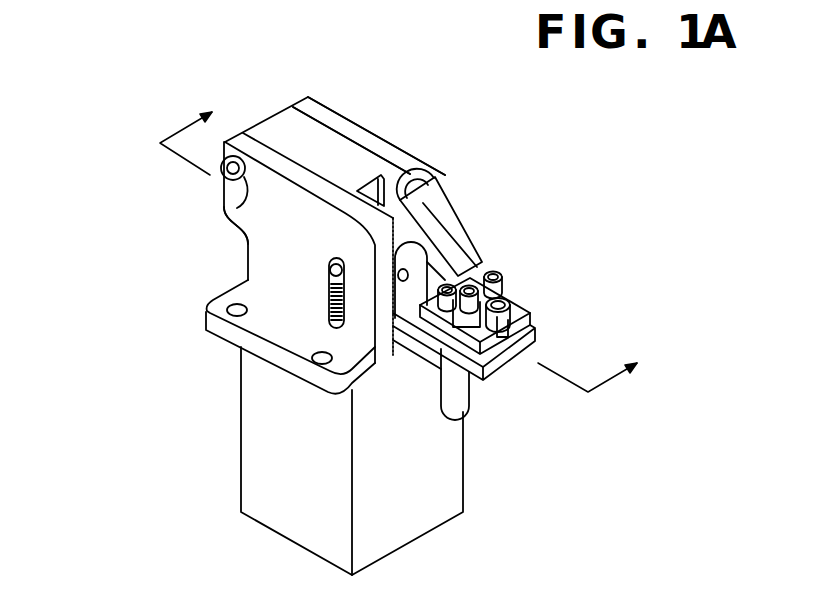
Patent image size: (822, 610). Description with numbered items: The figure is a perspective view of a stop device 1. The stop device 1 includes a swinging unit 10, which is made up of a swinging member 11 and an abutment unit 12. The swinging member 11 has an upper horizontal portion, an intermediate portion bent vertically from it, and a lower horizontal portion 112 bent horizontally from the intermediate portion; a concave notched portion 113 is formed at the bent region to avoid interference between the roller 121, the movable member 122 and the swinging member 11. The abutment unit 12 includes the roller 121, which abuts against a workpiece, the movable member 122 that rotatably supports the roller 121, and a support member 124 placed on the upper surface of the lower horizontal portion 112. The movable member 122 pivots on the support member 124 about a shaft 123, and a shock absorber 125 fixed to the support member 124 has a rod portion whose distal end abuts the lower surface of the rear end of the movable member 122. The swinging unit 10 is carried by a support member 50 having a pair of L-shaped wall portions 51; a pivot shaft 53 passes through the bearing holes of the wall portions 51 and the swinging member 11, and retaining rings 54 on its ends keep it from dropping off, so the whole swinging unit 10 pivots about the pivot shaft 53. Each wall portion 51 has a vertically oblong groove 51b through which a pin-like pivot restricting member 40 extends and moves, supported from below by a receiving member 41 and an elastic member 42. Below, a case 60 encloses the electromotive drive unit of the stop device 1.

The stop device 1 is at (96, 117).
The swinging unit 10 is at (346, 163).
The swinging member 11 is at (277, 137).
The abutment unit 12 is at (527, 291).
The pivot restricting member 40 is at (331, 264).
The receiving member 41 is at (333, 284).
The elastic member 42 is at (330, 313).
The support member 50 is at (184, 318).
The wall portion 51 is at (222, 334).
The groove 51b is at (352, 322).
The pivot shaft 53 is at (228, 181).
The retaining ring 54 is at (246, 214).
The case 60 is at (283, 527).
The lower horizontal portion 112 is at (470, 352).
The notched portion 113 is at (425, 170).
The roller 121 is at (440, 190).
The movable member 122 is at (455, 247).
The shaft 123 is at (403, 288).
The support member 124 is at (535, 312).
The shock absorber 125 is at (467, 393).